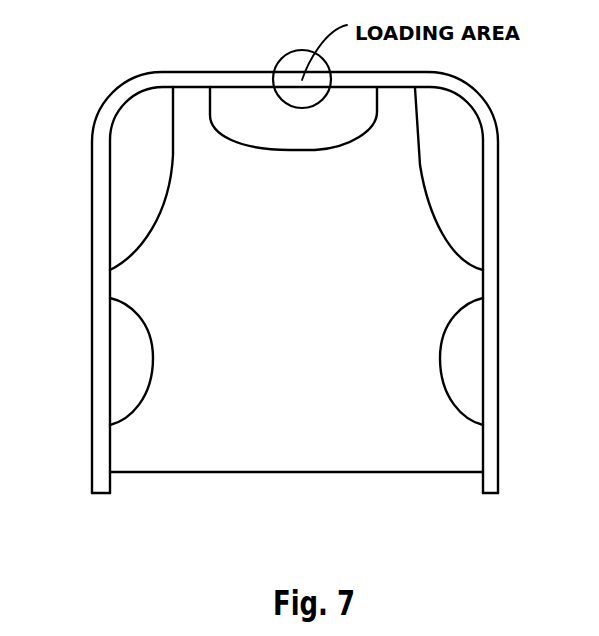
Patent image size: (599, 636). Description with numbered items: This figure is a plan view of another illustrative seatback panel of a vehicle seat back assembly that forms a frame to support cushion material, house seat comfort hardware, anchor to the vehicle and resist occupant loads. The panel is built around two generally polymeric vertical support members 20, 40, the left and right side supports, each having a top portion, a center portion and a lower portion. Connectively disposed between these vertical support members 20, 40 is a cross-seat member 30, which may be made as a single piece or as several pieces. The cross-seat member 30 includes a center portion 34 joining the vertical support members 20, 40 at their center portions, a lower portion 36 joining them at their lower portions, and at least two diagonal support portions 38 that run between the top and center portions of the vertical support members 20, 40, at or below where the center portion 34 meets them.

The vertical support member 20 is at (498, 285).
The cross-seat member 30 is at (413, 458).
The cross-seat member center portion 34 is at (445, 323).
The cross-seat member lower portion 36 is at (440, 402).
The cross-seat member diagonal support portion 38 is at (296, 178).
The vertical support member 40 is at (92, 278).